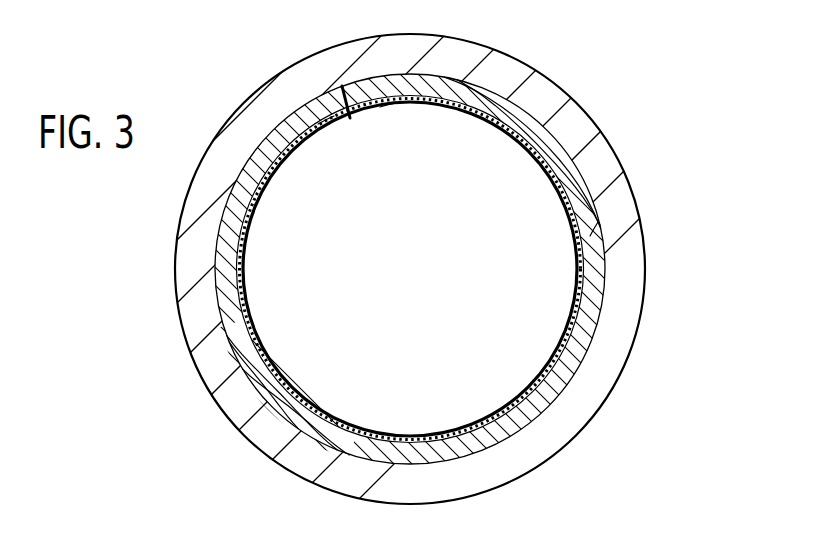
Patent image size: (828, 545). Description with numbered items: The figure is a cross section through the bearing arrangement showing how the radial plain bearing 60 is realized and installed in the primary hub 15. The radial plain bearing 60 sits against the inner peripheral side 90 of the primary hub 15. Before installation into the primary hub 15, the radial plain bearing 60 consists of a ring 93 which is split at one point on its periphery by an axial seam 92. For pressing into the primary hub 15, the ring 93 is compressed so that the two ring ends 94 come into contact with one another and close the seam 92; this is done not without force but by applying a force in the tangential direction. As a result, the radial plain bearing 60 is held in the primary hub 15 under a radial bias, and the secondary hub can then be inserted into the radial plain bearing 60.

The primary hub 15 is at (583, 138).
The inner peripheral side 90 is at (593, 190).
The axial seam 92 is at (350, 118).
The ring 93 is at (237, 327).
The ring ends 94 is at (326, 128).
The radial plain bearing 60 is at (598, 238).